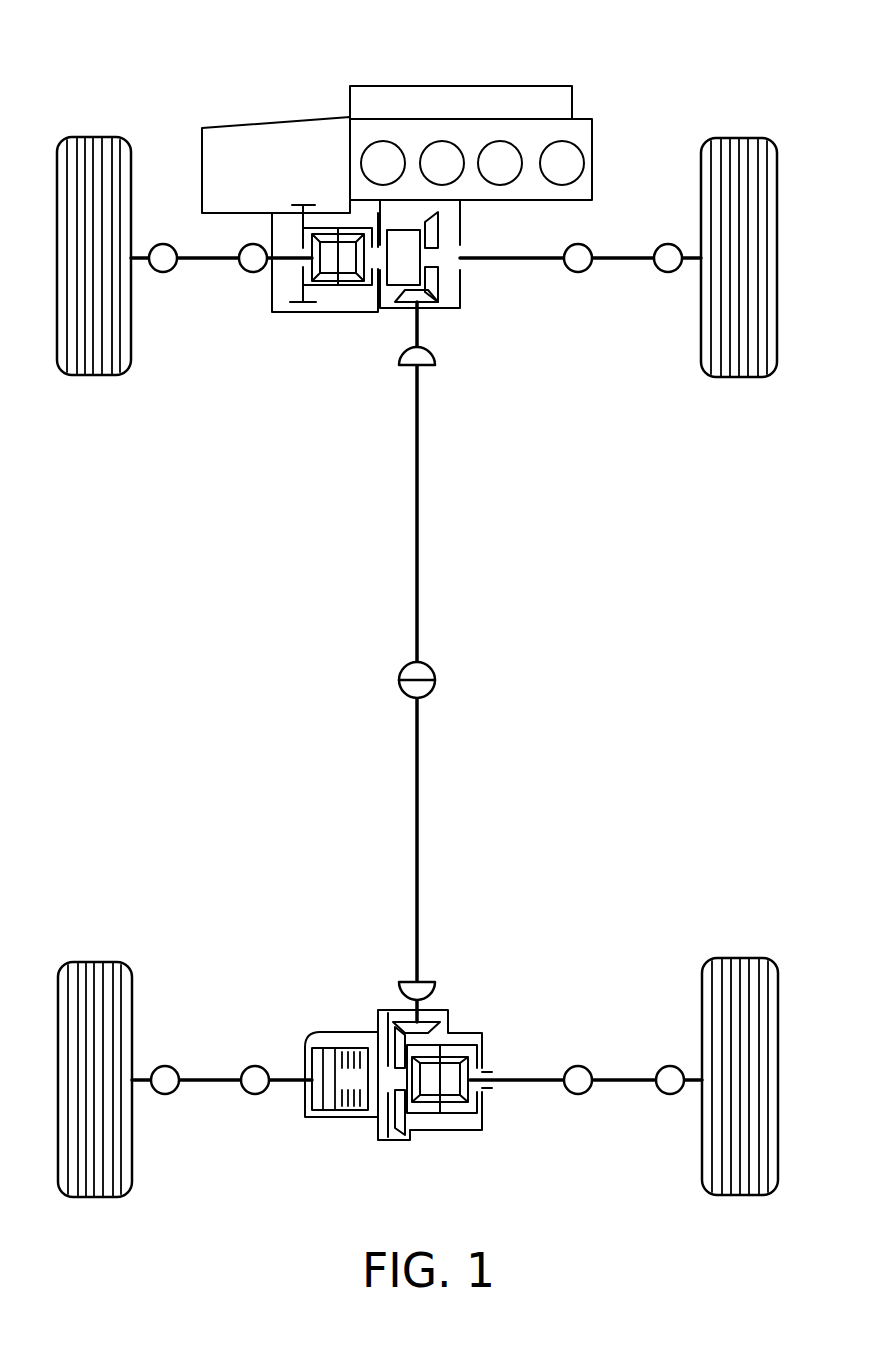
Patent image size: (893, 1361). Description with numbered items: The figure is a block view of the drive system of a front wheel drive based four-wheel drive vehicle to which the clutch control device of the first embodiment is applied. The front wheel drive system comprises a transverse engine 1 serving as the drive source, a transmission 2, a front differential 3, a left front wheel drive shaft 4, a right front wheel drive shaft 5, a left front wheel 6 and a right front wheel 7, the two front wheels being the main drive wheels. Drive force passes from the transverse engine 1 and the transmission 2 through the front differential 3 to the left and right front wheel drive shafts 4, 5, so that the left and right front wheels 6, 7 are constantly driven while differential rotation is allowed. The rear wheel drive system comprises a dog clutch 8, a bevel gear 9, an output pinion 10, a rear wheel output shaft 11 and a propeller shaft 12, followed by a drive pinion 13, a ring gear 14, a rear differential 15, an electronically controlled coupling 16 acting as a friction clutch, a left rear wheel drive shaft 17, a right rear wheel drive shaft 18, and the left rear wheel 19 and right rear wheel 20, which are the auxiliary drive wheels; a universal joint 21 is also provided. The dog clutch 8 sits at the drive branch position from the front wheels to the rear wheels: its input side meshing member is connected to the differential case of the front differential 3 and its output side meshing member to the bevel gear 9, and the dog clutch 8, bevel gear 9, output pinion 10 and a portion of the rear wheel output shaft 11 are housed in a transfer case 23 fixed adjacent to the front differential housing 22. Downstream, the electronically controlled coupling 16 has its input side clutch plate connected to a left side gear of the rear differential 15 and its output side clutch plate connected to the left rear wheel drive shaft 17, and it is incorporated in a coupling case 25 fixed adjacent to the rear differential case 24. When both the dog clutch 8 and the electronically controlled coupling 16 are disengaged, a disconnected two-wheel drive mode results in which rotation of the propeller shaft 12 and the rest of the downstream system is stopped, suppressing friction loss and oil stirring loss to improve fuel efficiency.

The transverse engine 1 is at (510, 82).
The transmission 2 is at (232, 123).
The front differential 3 is at (325, 326).
The left front wheel drive shaft 4 is at (200, 268).
The right front wheel drive shaft 5 is at (626, 252).
The left front wheel 6 is at (95, 137).
The right front wheel 7 is at (745, 138).
The dog clutch 8 is at (410, 222).
The bevel gear 9 is at (438, 280).
The output pinion 10 is at (405, 300).
The rear wheel output shaft 11 is at (422, 328).
The propeller shaft 12 is at (418, 745).
The drive pinion 13 is at (430, 1028).
The ring gear 14 is at (396, 1122).
The rear differential 15 is at (433, 1110).
The electronically controlled coupling 16 is at (337, 1048).
The left rear wheel drive shaft 17 is at (208, 1090).
The right rear wheel drive shaft 18 is at (622, 1090).
The left rear wheel 19 is at (95, 962).
The right rear wheel 20 is at (745, 958).
The universal joint 21 is at (160, 272).
The front differential housing 22 is at (338, 289).
The transfer case 23 is at (447, 310).
The rear differential case 24 is at (456, 1130).
The coupling case 25 is at (326, 1118).